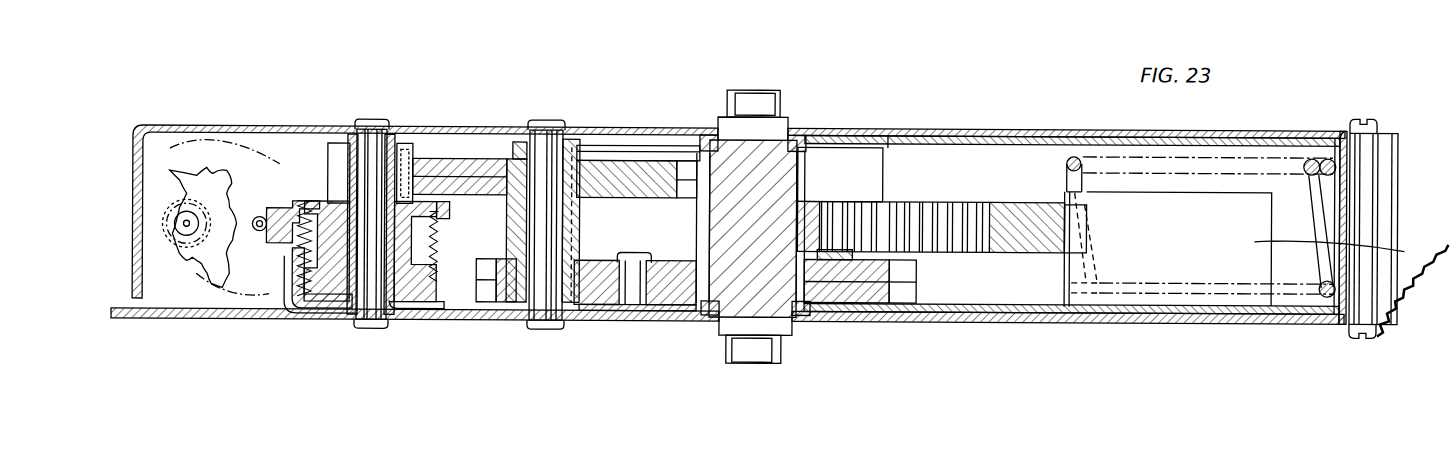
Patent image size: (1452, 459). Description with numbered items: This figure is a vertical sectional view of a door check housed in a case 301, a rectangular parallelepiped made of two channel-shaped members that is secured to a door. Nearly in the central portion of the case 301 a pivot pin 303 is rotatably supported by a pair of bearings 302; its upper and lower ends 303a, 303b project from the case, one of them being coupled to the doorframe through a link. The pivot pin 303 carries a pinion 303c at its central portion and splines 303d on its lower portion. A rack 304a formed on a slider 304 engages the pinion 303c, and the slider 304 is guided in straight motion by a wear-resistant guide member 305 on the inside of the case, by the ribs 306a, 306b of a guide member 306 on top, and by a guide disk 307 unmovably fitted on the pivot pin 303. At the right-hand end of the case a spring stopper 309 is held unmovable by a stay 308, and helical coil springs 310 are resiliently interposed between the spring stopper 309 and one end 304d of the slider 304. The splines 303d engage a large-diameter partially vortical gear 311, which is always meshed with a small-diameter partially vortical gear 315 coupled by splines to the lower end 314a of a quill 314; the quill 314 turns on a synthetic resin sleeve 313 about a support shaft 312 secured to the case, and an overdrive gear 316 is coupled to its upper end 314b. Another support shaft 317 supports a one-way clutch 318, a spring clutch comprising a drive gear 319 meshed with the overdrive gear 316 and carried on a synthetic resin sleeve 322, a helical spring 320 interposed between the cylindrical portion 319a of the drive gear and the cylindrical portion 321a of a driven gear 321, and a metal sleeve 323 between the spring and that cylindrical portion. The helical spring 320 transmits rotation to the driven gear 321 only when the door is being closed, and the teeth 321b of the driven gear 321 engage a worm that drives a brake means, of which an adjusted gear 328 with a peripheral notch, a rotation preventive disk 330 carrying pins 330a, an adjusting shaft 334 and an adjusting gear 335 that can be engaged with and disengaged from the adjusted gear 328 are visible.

The case 301 is at (878, 126).
The bearings 302 is at (800, 130).
The pivot pin 303 is at (742, 135).
The upper shaft end 303a is at (778, 110).
The lower shaft end 303b is at (735, 348).
The pinion 303c is at (805, 206).
The splines 303d is at (684, 308).
The slider 304 is at (1008, 204).
The rack 304a is at (928, 210).
The one end of the slider 304d is at (1087, 226).
The guide member 305 is at (978, 312).
The guide member 306 is at (934, 130).
The rib 306a is at (655, 193).
The rib 306b is at (890, 160).
The guide disk 307 is at (608, 322).
The stay 308 is at (1375, 156).
The spring stopper 309 is at (1313, 128).
The helical coil springs 310 is at (1083, 176).
The partially vortical gear 311 is at (880, 294).
The support shaft 312 is at (546, 126).
The synthetic resin sleeve 313 is at (543, 328).
The quill 314 is at (600, 190).
The lower end of the quill 314a is at (516, 300).
The upper end of the quill 314b is at (575, 143).
The partially vortical gear 315 is at (574, 300).
The overdrive gear 316 is at (476, 152).
The support shaft 317 is at (384, 126).
The one-way clutch 318 is at (324, 124).
The drive gear 319 is at (400, 132).
The cylindrical portion of the drive gear 319a is at (405, 288).
The helical spring 320 is at (309, 292).
The driven gear 321 is at (288, 200).
The cylindrical portion of the driven gear 321a is at (452, 300).
The teeth of the driven gear 321b is at (265, 207).
The synthetic resin sleeve 322 is at (372, 128).
The metal sleeve 323 is at (292, 278).
The adjusted gear 328 is at (198, 300).
The rotation preventive disk 330 is at (203, 257).
The pins 330a is at (193, 177).
The adjusting shaft 334 is at (186, 224).
The adjusting gear 335 is at (162, 201).